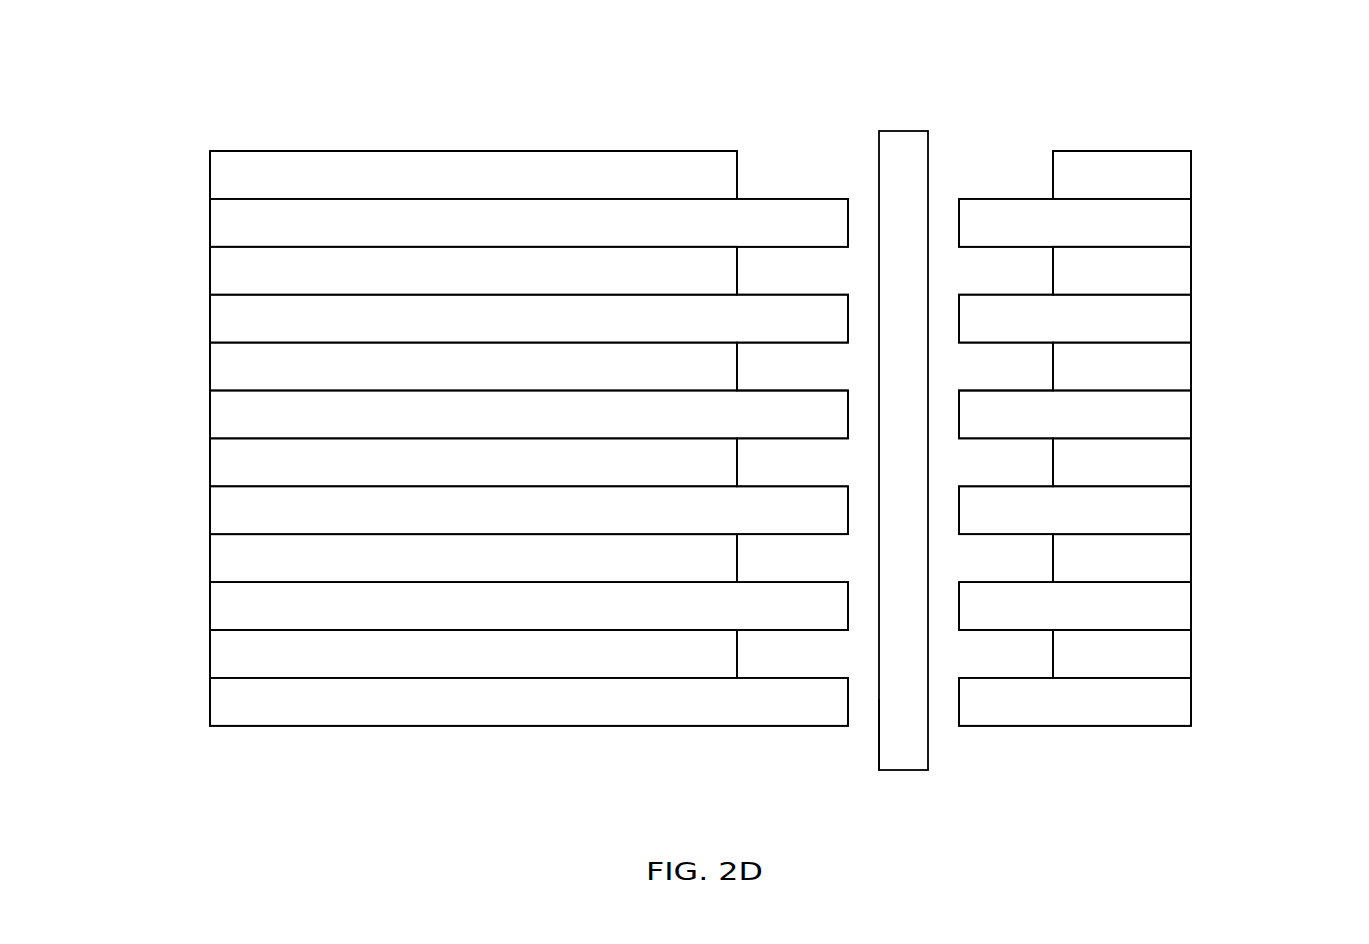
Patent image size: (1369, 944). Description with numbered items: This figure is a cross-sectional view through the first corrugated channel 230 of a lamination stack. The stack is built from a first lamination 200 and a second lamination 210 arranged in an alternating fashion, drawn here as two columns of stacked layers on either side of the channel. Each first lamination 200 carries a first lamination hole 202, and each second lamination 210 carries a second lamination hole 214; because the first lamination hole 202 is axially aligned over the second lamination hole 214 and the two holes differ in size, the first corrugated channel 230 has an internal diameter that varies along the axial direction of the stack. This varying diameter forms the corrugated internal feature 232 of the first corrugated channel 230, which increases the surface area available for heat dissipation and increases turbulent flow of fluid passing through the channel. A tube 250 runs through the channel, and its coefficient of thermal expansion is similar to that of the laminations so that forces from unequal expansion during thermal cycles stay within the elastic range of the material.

The first lamination 200 is at (210, 177).
The second lamination 210 is at (210, 225).
The first lamination hole 202 is at (773, 165).
The second lamination hole 214 is at (948, 212).
The first corrugated channel 230 is at (838, 43).
The corrugated internal feature 232 is at (853, 147).
The tube 250 is at (878, 733).